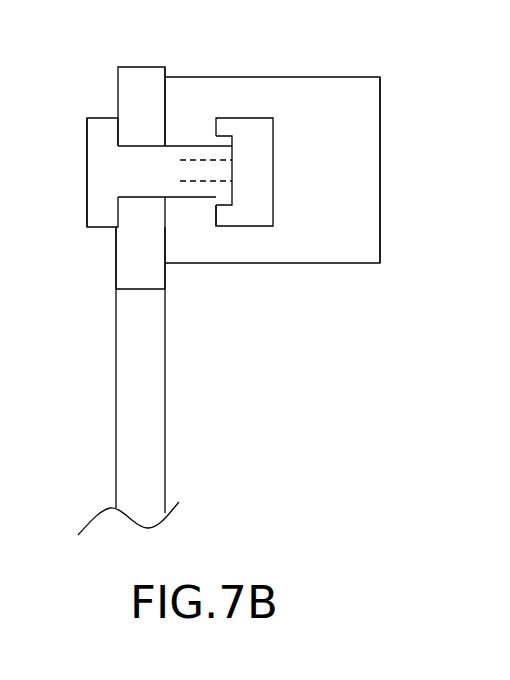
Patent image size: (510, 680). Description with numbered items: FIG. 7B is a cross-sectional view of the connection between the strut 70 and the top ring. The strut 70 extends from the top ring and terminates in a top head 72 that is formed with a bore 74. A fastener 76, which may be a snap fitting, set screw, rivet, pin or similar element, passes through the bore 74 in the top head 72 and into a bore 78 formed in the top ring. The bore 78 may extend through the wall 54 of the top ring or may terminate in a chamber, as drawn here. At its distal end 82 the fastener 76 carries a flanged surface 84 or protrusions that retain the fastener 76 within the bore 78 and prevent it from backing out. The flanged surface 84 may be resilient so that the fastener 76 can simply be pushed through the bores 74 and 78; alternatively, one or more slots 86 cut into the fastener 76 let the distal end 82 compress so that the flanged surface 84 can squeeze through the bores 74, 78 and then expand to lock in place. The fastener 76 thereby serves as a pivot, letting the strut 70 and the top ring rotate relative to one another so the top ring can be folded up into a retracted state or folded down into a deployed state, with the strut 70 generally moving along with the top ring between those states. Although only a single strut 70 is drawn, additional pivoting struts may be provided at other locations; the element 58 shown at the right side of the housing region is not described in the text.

The wall 54 is at (318, 88).
The housing wall 58 is at (380, 143).
The strut 70 is at (250, 207).
The top head 72 is at (116, 267).
The bore 74 is at (140, 143).
The fastener 76 is at (165, 102).
The bore 78 is at (189, 198).
The distal end 82 is at (225, 241).
The flanged surface 84 is at (232, 148).
The slot 86 is at (180, 172).